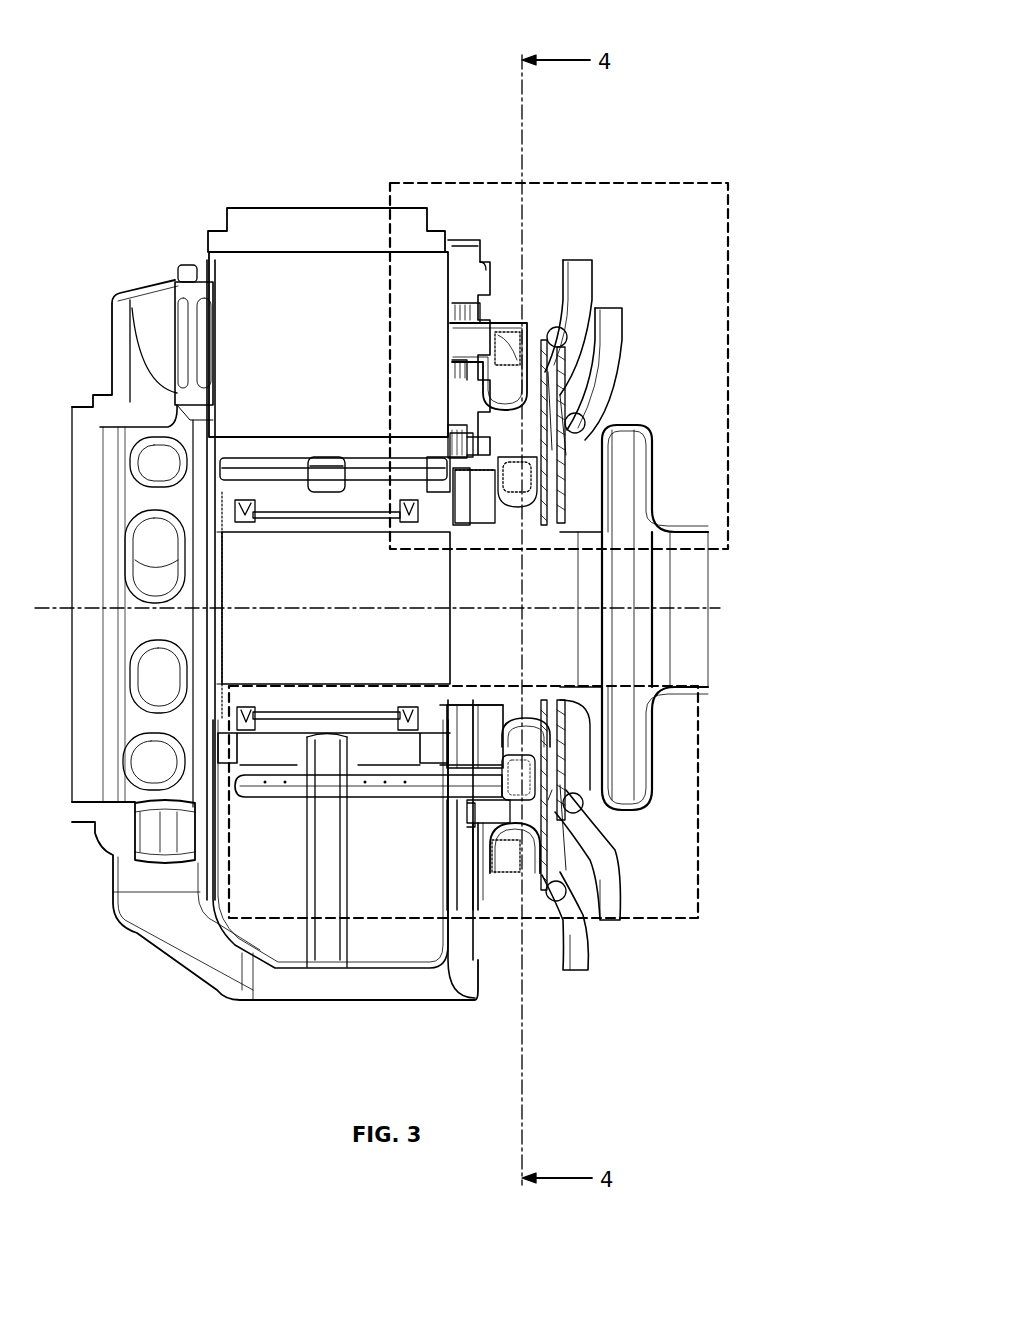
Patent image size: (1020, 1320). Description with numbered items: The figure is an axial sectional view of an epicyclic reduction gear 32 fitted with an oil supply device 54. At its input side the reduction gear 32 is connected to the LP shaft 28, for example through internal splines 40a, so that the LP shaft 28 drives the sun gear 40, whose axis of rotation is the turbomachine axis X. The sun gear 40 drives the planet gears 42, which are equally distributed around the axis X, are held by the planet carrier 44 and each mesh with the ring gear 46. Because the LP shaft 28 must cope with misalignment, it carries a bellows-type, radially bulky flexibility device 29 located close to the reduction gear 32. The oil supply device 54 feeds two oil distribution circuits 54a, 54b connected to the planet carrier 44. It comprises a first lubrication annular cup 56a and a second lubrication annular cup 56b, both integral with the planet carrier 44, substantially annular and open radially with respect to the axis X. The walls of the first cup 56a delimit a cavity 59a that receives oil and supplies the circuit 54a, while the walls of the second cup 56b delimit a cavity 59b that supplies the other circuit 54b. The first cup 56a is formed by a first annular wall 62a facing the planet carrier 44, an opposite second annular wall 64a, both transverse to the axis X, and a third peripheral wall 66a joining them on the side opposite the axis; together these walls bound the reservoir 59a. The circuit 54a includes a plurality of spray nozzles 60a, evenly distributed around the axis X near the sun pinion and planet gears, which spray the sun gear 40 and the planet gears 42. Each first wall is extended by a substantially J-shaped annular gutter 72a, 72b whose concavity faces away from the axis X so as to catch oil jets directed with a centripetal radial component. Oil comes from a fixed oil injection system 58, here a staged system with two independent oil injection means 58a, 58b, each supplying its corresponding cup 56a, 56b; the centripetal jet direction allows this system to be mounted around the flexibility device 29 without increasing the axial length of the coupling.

The reduction gear 32 is at (176, 214).
The ring gear 46 is at (272, 225).
The planet carrier 44 is at (120, 345).
The planet gears 42 is at (227, 443).
The sun gear 40 is at (243, 502).
The internal splines 40a is at (328, 525).
The axis of rotation X is at (95, 612).
The lubrication annular cup 56b is at (522, 323).
The oil supply device 54 is at (547, 340).
The oil injection system 58 is at (603, 292).
The cavity 59b is at (565, 355).
The oil distribution circuit 54b is at (505, 353).
The annular gutter 72b is at (597, 452).
The flexibility device 29 is at (625, 498).
The annular gutter 72a is at (517, 767).
The LP shaft 28 is at (690, 628).
The oil distribution circuit 54a is at (515, 730).
The first annular wall 62a is at (495, 760).
The second annular wall 64a is at (537, 780).
The cavity 59a is at (530, 807).
The lubrication annular cup 56a is at (540, 872).
The oil injection means 58a is at (628, 890).
The oil injection means 58b is at (560, 953).
The spray nozzles 60a is at (403, 790).
The third peripheral wall 66a is at (470, 800).